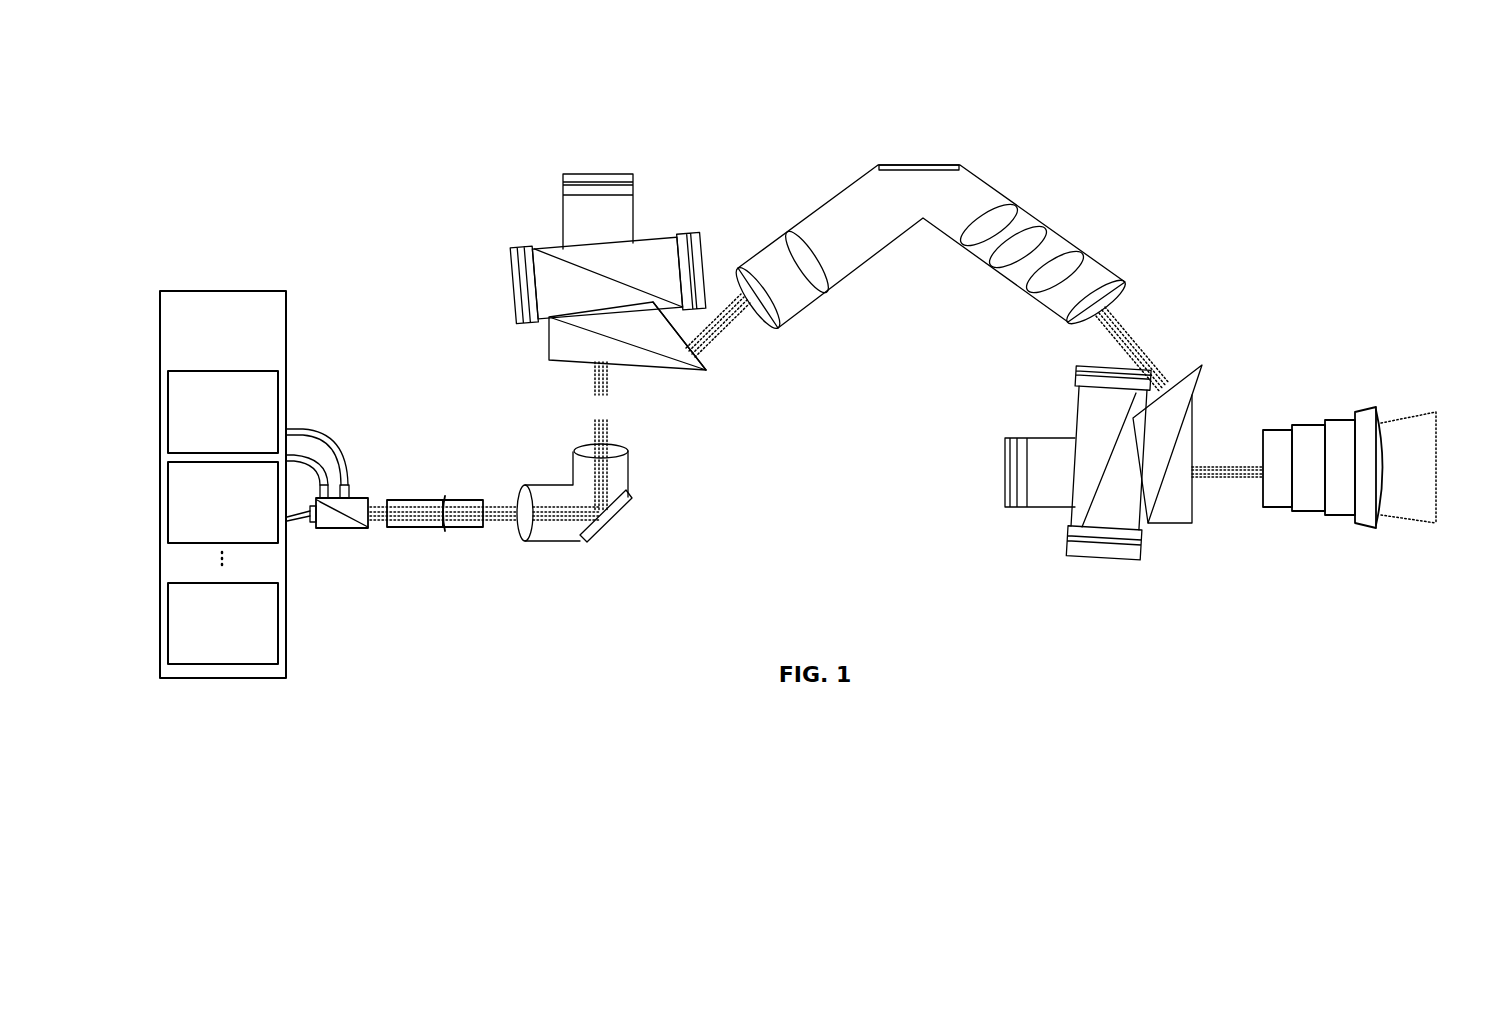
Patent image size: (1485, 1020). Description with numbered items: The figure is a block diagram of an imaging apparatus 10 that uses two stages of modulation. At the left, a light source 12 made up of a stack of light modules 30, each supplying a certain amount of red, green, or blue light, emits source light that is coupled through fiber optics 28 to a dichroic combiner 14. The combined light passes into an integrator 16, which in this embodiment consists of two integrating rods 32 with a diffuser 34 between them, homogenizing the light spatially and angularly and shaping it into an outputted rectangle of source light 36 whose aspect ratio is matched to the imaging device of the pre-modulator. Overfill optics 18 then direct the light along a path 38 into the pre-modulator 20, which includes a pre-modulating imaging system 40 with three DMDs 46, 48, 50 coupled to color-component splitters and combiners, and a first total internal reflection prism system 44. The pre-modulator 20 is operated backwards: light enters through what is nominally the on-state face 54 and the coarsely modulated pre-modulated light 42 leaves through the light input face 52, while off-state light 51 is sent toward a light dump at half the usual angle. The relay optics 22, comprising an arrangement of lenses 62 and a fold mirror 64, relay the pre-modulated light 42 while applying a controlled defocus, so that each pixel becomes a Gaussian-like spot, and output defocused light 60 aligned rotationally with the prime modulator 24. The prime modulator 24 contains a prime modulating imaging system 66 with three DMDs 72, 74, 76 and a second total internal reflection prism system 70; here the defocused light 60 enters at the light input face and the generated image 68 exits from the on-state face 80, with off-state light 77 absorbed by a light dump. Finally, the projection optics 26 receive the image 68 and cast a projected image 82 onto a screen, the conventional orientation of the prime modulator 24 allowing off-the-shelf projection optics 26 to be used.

The imaging apparatus 10 is at (351, 92).
The light source 12 is at (210, 367).
The dichroic combiner 14 is at (343, 546).
The integrator 16 is at (435, 530).
The overfill optics 18 is at (575, 561).
The pre-modulator 20 is at (608, 284).
The relay optics 22 is at (930, 222).
The prime modulator 24 is at (1117, 483).
The projection optics 26 is at (1338, 526).
The fiber optics 28 is at (332, 439).
The light modules 30 is at (210, 446).
The integrating rods 32 is at (403, 525).
The diffuser 34 is at (445, 496).
The outputted rectangle of source light 36 is at (485, 513).
The path of the source light 38 is at (600, 437).
The pre-modulating imaging system 40 is at (595, 271).
The pre-modulated light 42 is at (718, 325).
The first total internal reflection prism system 44 is at (638, 363).
The DMD 46 is at (636, 186).
The DMD 48 is at (524, 285).
The DMD 50 is at (691, 271).
The off-state light 51 is at (550, 367).
The light input face 52 is at (708, 365).
The on-state face 54 is at (619, 362).
The defocused light 60 is at (1132, 349).
The lenses 62 is at (1034, 238).
The fold mirror 64 is at (933, 165).
The prime modulating imaging system 66 is at (1096, 476).
The image 68 is at (1227, 472).
The second total internal reflection prism system 70 is at (1198, 470).
The DMD 72 is at (1020, 436).
The DMD 74 is at (1104, 543).
The DMD 76 is at (1113, 378).
The off-state light 77 is at (1197, 526).
The on-state face 80 is at (1194, 445).
The projected image 82 is at (1408, 467).